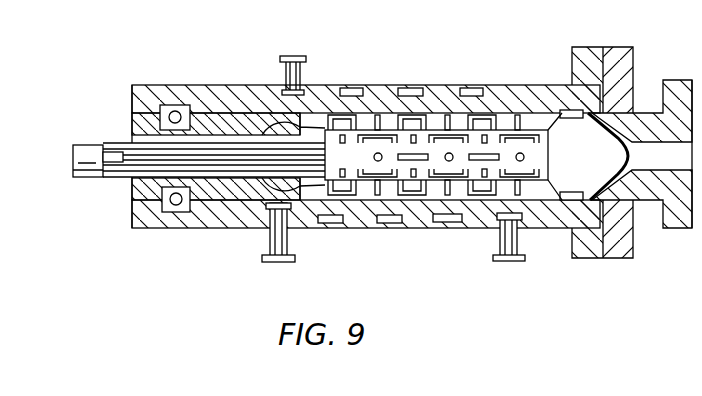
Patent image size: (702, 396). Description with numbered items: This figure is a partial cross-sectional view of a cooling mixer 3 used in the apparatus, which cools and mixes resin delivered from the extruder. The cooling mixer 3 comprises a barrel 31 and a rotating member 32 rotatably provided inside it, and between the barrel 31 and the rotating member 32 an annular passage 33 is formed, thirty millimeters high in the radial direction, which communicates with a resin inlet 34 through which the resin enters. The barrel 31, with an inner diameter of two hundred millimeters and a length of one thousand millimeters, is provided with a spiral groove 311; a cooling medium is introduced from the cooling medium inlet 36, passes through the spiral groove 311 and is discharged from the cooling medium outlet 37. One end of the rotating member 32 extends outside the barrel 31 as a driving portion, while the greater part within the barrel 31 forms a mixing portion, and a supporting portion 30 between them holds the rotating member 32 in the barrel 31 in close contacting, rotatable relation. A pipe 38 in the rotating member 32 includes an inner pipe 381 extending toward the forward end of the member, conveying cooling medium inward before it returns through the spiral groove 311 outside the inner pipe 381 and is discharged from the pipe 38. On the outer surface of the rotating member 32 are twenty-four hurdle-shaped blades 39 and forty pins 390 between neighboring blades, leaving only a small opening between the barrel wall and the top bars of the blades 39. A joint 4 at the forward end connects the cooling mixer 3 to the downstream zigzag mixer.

The cooling mixer 3 is at (232, 231).
The supporting portion 30 is at (210, 190).
The barrel 31 is at (384, 88).
The spiral groove 311 is at (345, 88).
The rotating member 32 is at (480, 162).
The annular passage 33 is at (369, 203).
The resin inlet 34 is at (278, 243).
The cooling medium inlet 36 is at (288, 68).
The cooling medium outlet 37 is at (510, 235).
The pipe 38 is at (80, 178).
The inner pipe 381 is at (118, 156).
The hurdle-shaped blades 39 is at (445, 181).
The pins 390 is at (448, 118).
The joint 4 is at (633, 62).